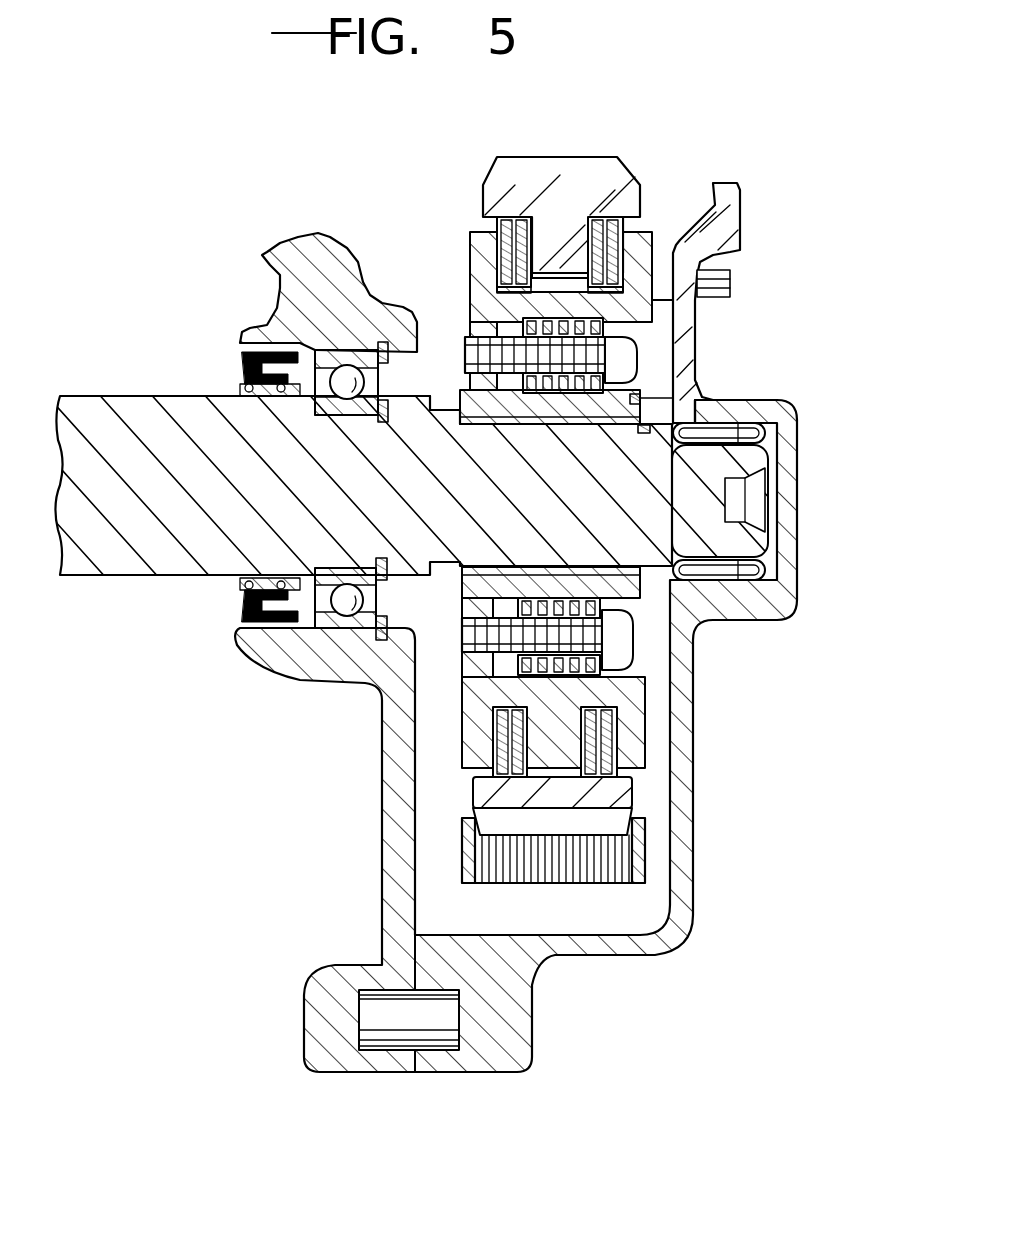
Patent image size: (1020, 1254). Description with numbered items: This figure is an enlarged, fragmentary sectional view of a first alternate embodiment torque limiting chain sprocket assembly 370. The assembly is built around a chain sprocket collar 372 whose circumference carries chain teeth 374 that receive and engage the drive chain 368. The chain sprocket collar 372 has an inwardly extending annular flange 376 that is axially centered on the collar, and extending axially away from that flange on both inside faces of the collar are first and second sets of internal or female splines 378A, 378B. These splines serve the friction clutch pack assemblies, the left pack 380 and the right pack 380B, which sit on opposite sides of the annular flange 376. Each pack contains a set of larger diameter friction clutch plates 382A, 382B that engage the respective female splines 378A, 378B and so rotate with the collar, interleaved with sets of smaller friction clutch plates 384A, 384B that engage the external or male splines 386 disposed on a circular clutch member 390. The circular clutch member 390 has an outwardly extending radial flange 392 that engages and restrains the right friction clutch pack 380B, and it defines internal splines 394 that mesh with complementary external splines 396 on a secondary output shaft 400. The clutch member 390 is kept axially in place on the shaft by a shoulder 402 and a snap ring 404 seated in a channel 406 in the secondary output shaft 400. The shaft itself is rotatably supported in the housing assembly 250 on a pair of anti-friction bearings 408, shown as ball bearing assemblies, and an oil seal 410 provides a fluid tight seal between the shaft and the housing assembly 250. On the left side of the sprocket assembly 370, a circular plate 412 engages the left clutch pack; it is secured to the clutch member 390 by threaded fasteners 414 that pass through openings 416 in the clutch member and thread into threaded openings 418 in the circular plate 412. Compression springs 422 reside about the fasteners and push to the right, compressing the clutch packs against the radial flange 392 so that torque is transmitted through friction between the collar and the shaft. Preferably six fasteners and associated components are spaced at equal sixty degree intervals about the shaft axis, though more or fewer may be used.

The housing assembly 250 is at (375, 905).
The drive chain 368 is at (642, 862).
The torque limiting chain sprocket assembly 370 is at (690, 137).
The chain sprocket collar 372 is at (625, 800).
The chain teeth 374 is at (643, 830).
The annular flange 376 is at (622, 742).
The first set of internal splines 378A is at (492, 222).
The second set of internal splines 378B is at (625, 210).
The friction clutch pack assembly 380 is at (472, 242).
The right friction clutch pack assembly 380B is at (648, 253).
The first set of larger diameter friction clutch plates 382A is at (520, 220).
The second set of larger diameter friction clutch plates 382B is at (605, 220).
The first set of smaller friction clutch plates 384A is at (505, 300).
The second set of smaller friction clutch plates 384B is at (640, 302).
The external splines 386 is at (640, 335).
The circular clutch member 390 is at (508, 422).
The radial flange 392 is at (715, 200).
The internal splines 394 is at (660, 415).
The external splines 396 is at (655, 440).
The secondary output shaft 400 is at (118, 552).
The shoulder 402 is at (432, 402).
The snap ring 404 is at (638, 410).
The channel 406 is at (645, 436).
The anti-friction bearings 408 is at (245, 636).
The oil seal 410 is at (248, 352).
The circular plate 412 is at (385, 715).
The threaded fasteners 414 is at (628, 640).
The openings 416 is at (535, 568).
The threaded openings 418 is at (458, 648).
The compression springs 422 is at (640, 672).